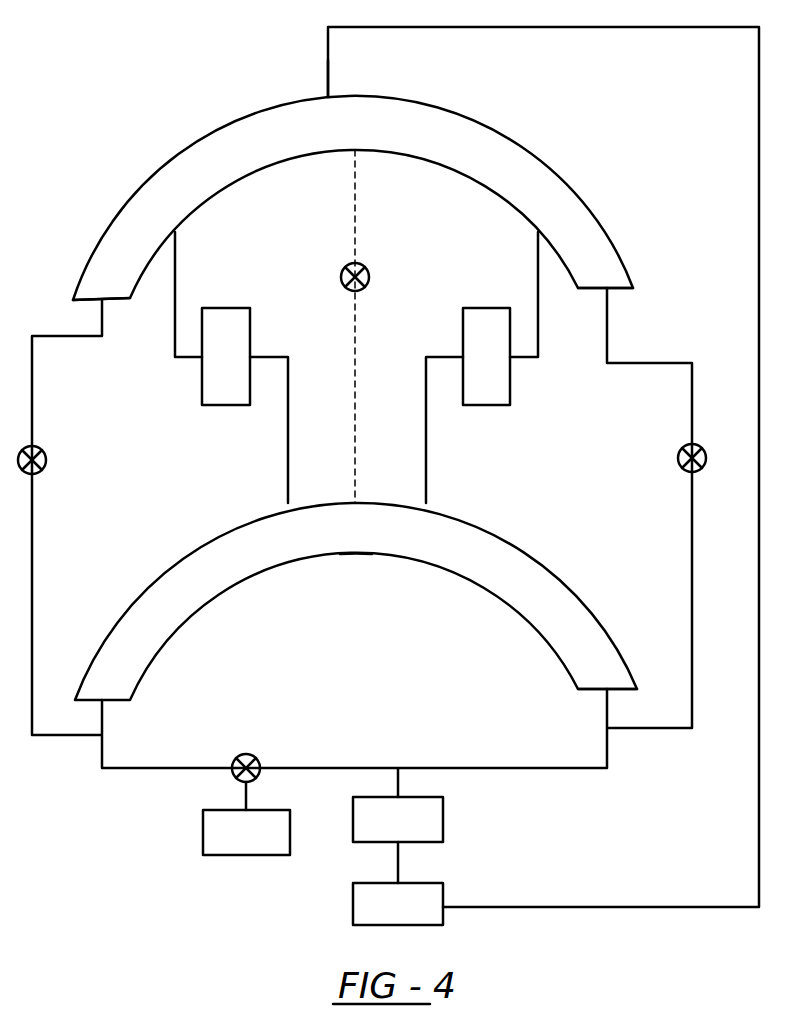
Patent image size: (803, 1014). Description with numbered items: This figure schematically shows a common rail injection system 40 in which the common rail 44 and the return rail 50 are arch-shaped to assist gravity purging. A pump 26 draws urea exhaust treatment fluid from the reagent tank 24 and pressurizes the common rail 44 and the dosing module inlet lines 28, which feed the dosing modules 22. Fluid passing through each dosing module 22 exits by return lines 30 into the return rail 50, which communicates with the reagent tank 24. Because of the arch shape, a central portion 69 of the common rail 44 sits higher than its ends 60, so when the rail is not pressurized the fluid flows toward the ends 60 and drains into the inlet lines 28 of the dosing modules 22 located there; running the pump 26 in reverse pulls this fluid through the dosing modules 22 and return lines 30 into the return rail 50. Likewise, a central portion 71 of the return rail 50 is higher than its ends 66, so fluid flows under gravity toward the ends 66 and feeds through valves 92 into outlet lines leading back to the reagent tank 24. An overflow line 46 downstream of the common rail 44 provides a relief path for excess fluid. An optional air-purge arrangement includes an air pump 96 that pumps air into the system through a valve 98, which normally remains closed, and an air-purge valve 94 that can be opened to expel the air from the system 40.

The common rail injection system 40 is at (106, 118).
The return rail 50 is at (566, 140).
The central portion of return rail 71 is at (356, 97).
The ends of return rail 66 is at (88, 263).
The overflow line 46 is at (757, 192).
The return lines 30 is at (177, 290).
The dosing modules 22 is at (252, 328).
The dosing module inlet lines 28 is at (290, 447).
The air-purge valve 94 is at (368, 267).
The valves 92 is at (47, 452).
The common rail 44 is at (592, 563).
The central portion of common rail 69 is at (352, 556).
The ends of common rail 60 is at (625, 658).
The valve 98 is at (245, 753).
The air pump 96 is at (203, 832).
The pump 26 is at (443, 819).
The reagent tank 24 is at (355, 897).